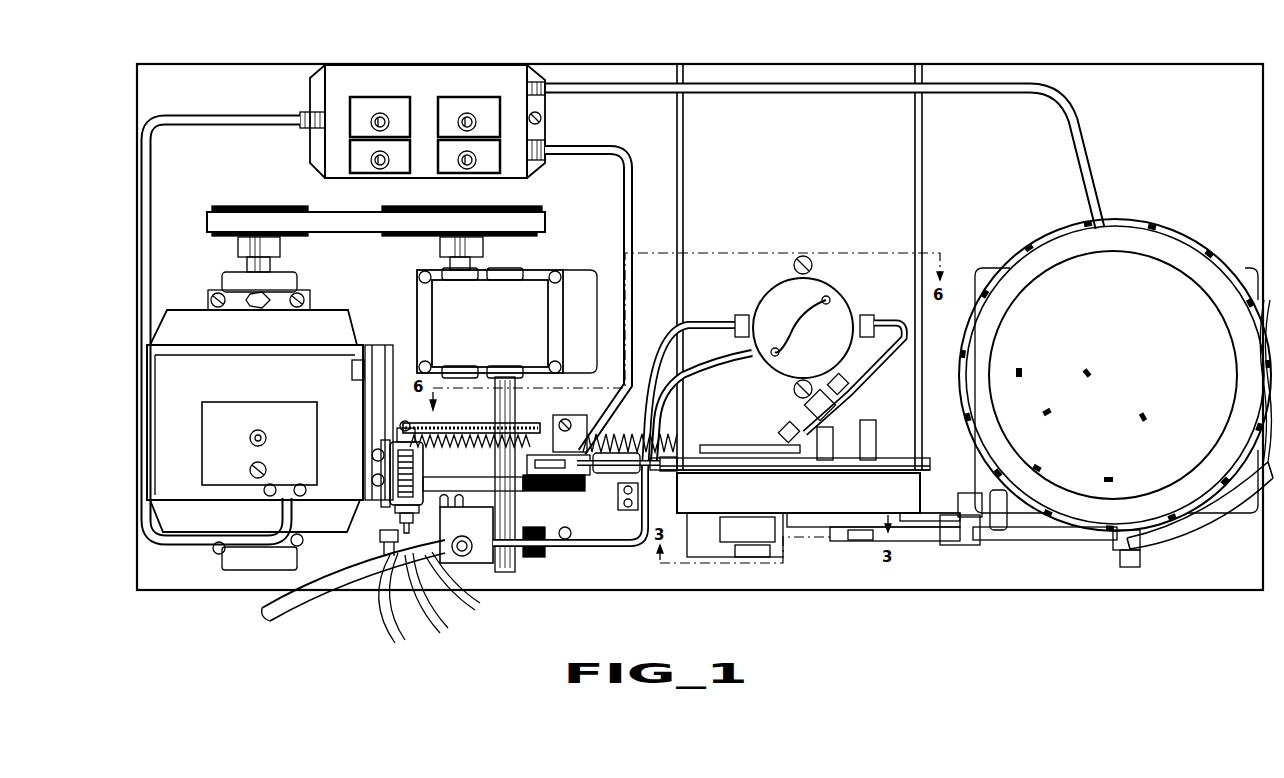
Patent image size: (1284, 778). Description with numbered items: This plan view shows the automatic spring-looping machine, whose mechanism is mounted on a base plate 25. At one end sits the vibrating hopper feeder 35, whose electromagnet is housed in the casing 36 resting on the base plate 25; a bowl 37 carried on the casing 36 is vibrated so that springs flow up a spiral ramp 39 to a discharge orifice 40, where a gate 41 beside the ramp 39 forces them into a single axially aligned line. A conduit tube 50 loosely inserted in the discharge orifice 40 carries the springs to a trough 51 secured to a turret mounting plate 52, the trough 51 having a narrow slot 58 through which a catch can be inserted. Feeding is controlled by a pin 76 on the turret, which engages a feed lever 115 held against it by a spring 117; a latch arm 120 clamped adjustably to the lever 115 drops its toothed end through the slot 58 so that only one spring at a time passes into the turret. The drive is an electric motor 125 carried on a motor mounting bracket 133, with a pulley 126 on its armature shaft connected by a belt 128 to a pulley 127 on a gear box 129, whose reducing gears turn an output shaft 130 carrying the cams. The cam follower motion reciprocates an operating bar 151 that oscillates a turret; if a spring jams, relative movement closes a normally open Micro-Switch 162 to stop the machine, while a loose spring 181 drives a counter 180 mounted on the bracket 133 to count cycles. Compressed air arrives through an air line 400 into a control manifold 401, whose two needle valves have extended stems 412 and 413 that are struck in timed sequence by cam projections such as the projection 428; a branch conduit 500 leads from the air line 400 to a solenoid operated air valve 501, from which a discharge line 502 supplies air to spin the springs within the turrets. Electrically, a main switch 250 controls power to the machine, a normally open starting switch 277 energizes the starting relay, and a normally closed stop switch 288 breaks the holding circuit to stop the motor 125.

The base plate 25 is at (967, 62).
The main switch 250 is at (490, 97).
The starting switch 277 is at (360, 168).
The stop switch 288 is at (455, 168).
The pulley 126 is at (243, 207).
The pulley 127 is at (505, 207).
The belt 128 is at (346, 226).
The gear box 129 is at (438, 300).
The motor mounting bracket 133 is at (384, 355).
The motor 125 is at (250, 380).
The output shaft 130 is at (514, 416).
The loose spring 181 is at (440, 425).
The Micro-Switch 162 is at (566, 432).
The counter 180 is at (420, 470).
The needle valve stem 413 is at (393, 505).
The needle valve stem 412 is at (455, 508).
The control manifold 401 is at (485, 565).
The air line 400 is at (292, 612).
The cam projection 428 is at (545, 492).
The branch compressed air conduit 500 is at (613, 548).
The solenoid operated air valve 501 is at (768, 300).
The discharge line 502 is at (853, 378).
The operating bar 151 is at (703, 442).
The turret mounting plate 52 is at (758, 502).
The pin 76 is at (783, 515).
The feed lever 115 is at (838, 513).
The latch arm 120 is at (868, 543).
The spring 117 is at (950, 520).
The narrow slot 58 is at (940, 548).
The trough 51 is at (960, 547).
The conduit tube 50 is at (1076, 542).
The discharge orifice 40 is at (1123, 528).
The casing 36 is at (990, 272).
The vibrating hopper feeder 35 is at (1166, 220).
The bowl 37 is at (1078, 277).
The spiral ramp 39 is at (1212, 325).
The gate 41 is at (1236, 492).